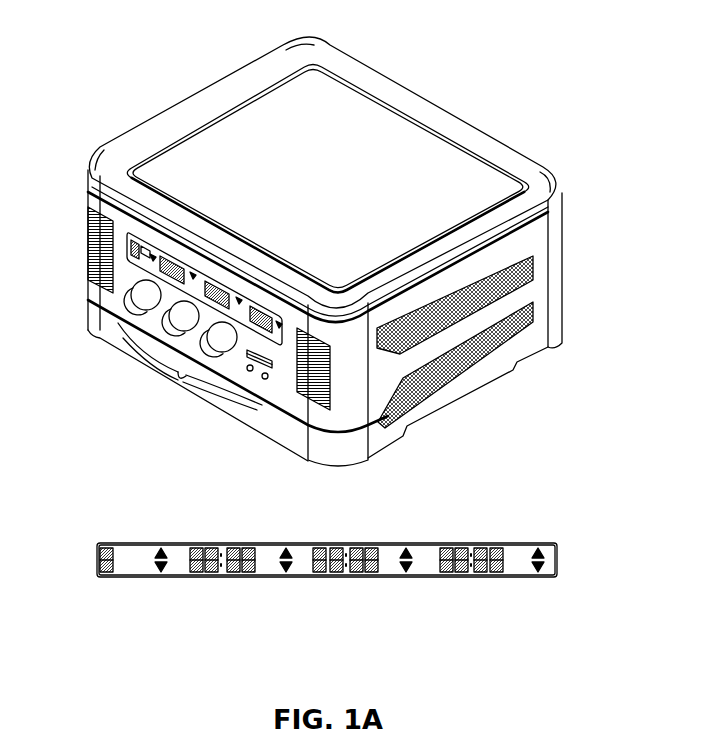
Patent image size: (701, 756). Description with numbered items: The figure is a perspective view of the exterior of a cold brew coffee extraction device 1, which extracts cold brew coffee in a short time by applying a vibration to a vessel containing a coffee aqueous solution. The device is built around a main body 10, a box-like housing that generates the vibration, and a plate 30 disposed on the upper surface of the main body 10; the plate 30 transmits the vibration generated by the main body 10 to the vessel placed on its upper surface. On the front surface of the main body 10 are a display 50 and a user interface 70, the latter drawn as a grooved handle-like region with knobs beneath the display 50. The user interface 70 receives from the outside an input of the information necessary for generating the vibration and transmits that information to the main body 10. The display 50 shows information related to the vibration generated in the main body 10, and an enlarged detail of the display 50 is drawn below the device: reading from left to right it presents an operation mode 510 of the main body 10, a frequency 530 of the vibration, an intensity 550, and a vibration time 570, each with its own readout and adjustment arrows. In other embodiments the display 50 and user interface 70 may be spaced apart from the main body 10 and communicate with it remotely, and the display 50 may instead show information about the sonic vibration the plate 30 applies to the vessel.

The cold brew coffee extraction device 1 is at (178, 23).
The main body 10 is at (538, 287).
The plate 30 is at (377, 120).
The display 50 is at (127, 250).
The user interface 70 is at (182, 377).
The operation mode 510 is at (150, 578).
The frequency 530 is at (213, 578).
The intensity 550 is at (335, 578).
The vibration time 570 is at (464, 578).